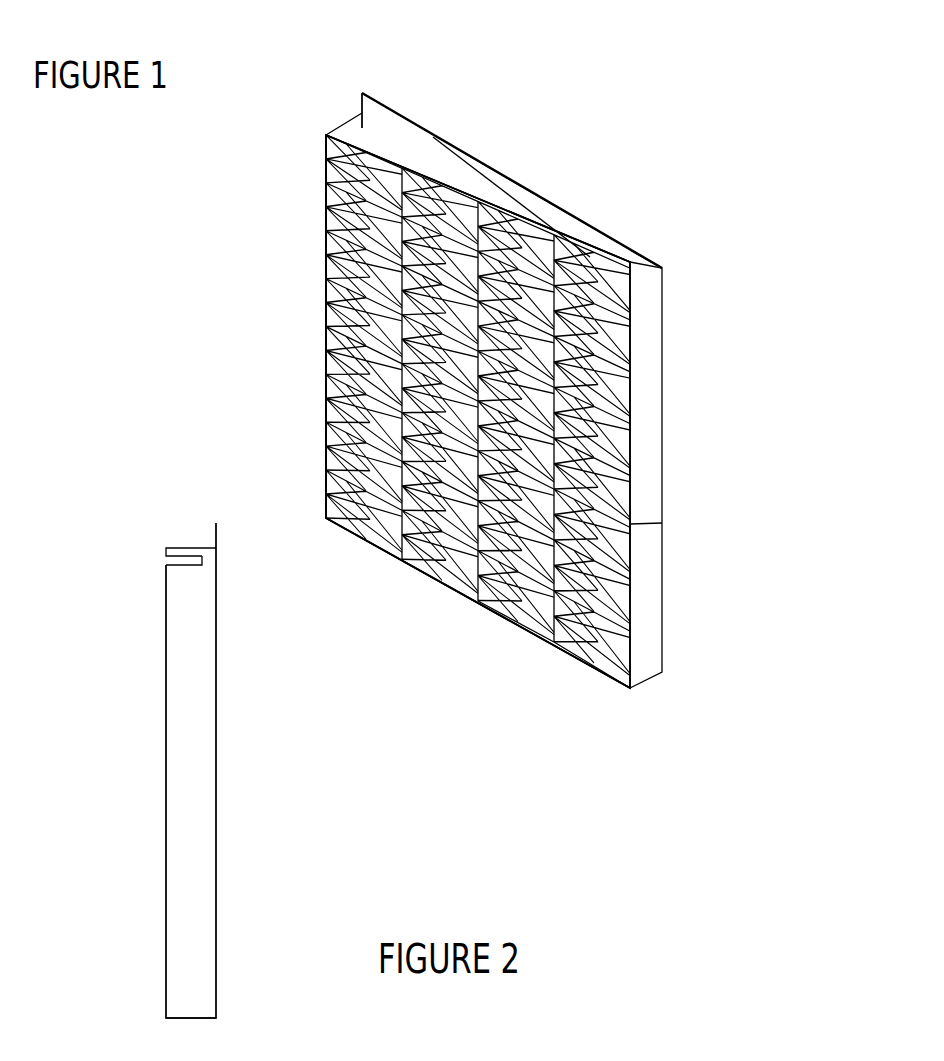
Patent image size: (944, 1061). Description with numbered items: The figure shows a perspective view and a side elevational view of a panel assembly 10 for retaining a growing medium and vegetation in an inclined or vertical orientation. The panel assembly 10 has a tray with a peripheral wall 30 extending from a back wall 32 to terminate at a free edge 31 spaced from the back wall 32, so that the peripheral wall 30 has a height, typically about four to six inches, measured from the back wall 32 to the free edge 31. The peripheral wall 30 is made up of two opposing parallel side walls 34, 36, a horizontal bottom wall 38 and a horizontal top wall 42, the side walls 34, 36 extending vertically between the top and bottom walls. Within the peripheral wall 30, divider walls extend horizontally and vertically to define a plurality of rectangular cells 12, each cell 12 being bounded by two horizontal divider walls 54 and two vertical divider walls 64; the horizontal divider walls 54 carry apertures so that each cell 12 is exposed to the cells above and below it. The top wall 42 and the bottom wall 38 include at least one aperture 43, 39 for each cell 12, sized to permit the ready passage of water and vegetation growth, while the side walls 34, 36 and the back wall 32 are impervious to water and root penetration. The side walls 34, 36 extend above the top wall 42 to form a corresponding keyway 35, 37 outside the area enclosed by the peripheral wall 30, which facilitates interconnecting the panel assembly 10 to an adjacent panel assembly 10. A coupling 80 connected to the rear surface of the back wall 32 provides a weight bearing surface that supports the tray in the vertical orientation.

In FIG. 1, the panel assembly 10 is at (735, 468).
In FIG. 2, the panel assembly 10 is at (134, 683).
In FIG. 1, the cells 12 is at (355, 404).
In FIG. 1, the peripheral wall 30 is at (335, 220).
In FIG. 1, the free edge 31 is at (330, 265).
In FIG. 1, the back wall 32 is at (597, 222).
In FIG. 1, the side wall 34 is at (330, 318).
In FIG. 1, the keyway 35 is at (345, 128).
In FIG. 1, the side wall 36 is at (647, 450).
In FIG. 2, the side wall 36 is at (208, 808).
In FIG. 1, the keyway 37 is at (658, 295).
In FIG. 2, the keyway 37 is at (197, 567).
In FIG. 1, the bottom wall 38 is at (604, 658).
In FIG. 1, the aperture 39 is at (522, 599).
In FIG. 1, the top wall 42 is at (430, 173).
In FIG. 1, the aperture 43 is at (400, 122).
In FIG. 1, the horizontal divider walls 54 is at (328, 457).
In FIG. 1, the vertical divider walls 64 is at (633, 524).
In FIG. 1, the coupling 80 is at (545, 207).
In FIG. 2, the coupling 80 is at (216, 524).